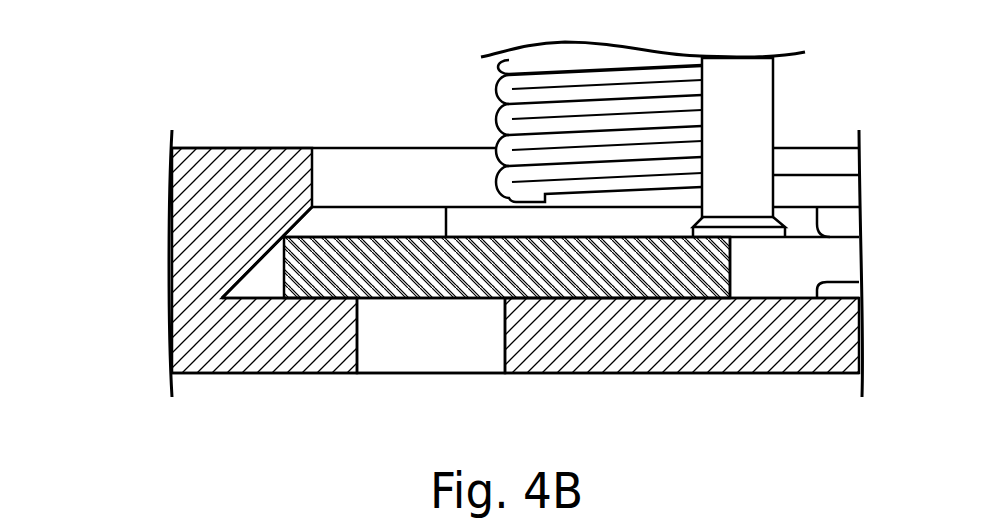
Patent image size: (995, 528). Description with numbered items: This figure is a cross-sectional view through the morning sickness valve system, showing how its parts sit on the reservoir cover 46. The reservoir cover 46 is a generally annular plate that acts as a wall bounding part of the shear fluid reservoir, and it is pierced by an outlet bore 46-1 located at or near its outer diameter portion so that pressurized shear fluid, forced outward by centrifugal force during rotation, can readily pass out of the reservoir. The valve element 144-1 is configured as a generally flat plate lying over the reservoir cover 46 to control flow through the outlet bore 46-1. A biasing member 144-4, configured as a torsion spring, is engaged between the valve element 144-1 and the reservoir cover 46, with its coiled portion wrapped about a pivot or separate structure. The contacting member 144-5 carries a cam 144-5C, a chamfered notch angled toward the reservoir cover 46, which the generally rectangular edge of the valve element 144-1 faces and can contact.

The contacting member 144-5 is at (227, 163).
The cam 144-5C is at (250, 270).
The biasing member 144-4 is at (497, 97).
The valve element 144-1 is at (628, 268).
The reservoir cover 46 is at (762, 343).
The outlet bore 46-1 is at (405, 328).